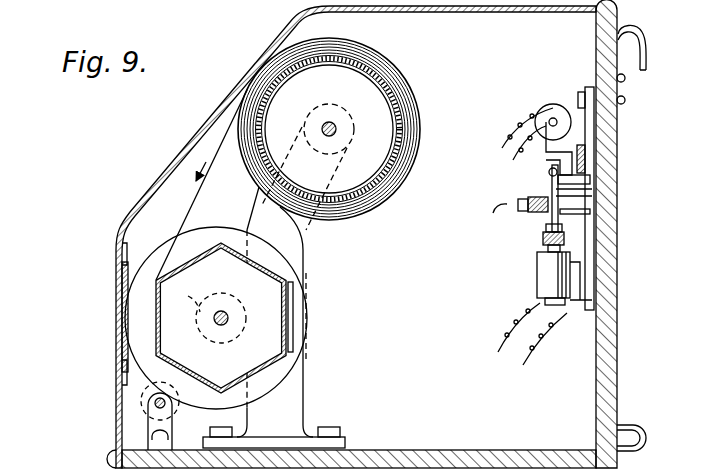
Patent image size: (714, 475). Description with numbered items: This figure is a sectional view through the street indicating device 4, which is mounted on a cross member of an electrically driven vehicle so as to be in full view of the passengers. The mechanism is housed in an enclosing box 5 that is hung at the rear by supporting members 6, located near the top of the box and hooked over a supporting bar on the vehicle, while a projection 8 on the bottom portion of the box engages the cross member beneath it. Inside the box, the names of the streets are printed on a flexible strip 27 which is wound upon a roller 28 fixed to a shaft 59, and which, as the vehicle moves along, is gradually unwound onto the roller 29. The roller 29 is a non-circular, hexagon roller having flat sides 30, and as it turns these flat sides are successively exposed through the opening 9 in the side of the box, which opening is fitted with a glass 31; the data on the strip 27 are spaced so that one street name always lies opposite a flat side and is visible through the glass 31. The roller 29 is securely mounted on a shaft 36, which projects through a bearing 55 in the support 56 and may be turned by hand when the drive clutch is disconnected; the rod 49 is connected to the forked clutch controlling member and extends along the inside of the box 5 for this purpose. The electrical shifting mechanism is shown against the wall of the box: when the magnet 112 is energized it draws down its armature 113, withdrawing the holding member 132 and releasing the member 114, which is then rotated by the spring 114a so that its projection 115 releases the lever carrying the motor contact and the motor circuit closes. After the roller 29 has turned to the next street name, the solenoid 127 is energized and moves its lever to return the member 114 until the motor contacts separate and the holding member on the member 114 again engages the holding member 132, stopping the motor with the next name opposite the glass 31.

The street indicating device 4 is at (145, 190).
The enclosing box 5 is at (618, 345).
The supporting members 6 is at (645, 41).
The projections 8 is at (636, 430).
The opening 9 is at (116, 278).
The flexible strip 27 is at (222, 145).
The roller 28 is at (384, 80).
The roller 29 is at (292, 278).
The flat sides 30 is at (238, 246).
The glass 31 is at (125, 302).
The shaft 36 is at (215, 323).
The rod 49 is at (154, 403).
The bearing 55 is at (186, 294).
The support 56 is at (304, 243).
The shaft 59 is at (336, 126).
The magnet 112 is at (540, 270).
The armature 113 is at (543, 240).
The member 114 is at (552, 193).
The spring 114a is at (520, 207).
The projection 115 is at (570, 191).
The solenoid 127 is at (553, 104).
The holding member 132 is at (546, 230).